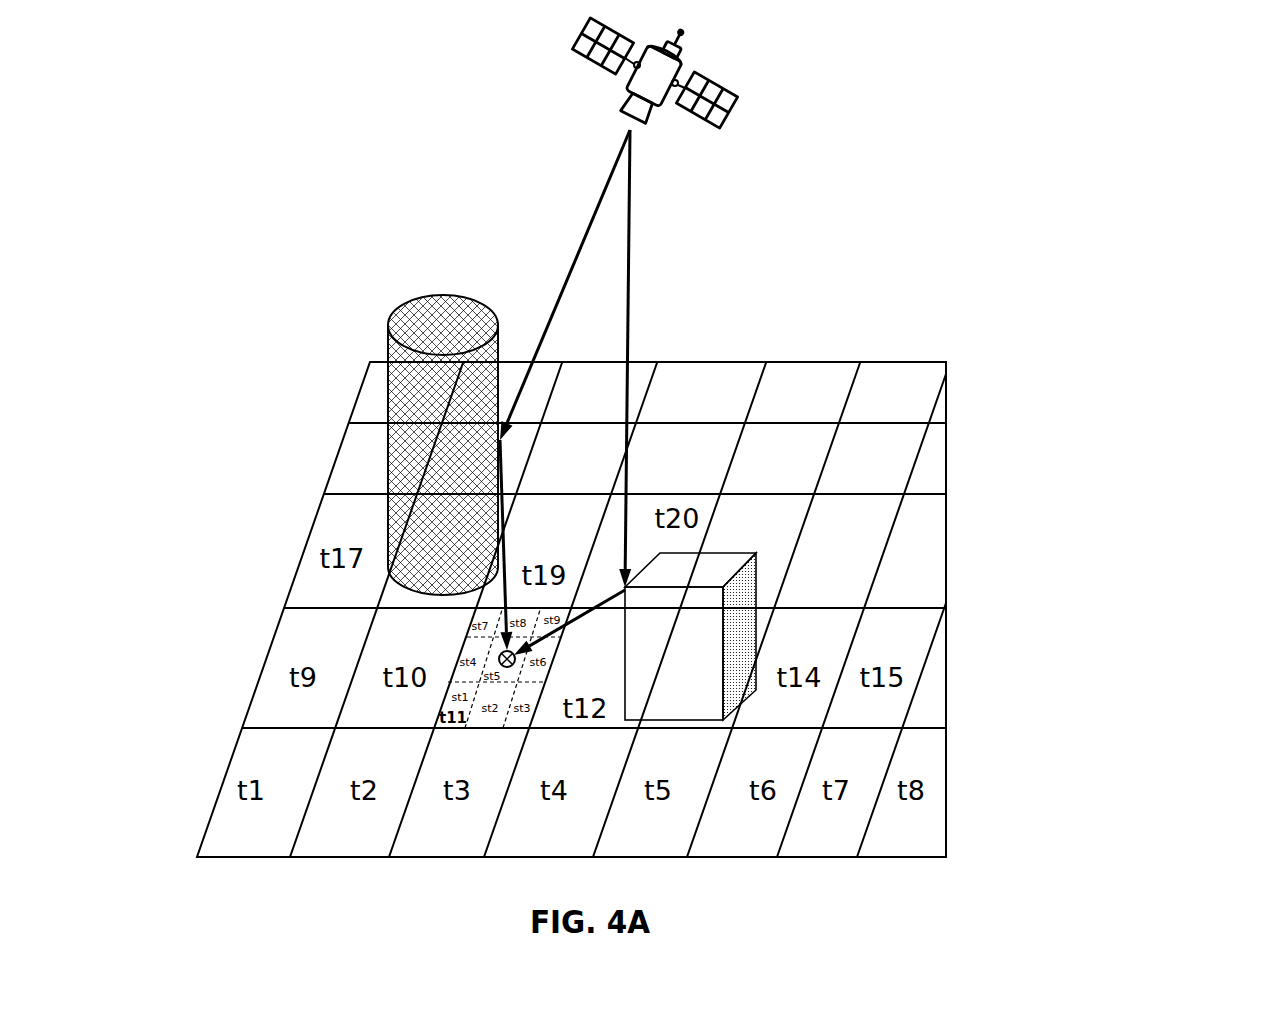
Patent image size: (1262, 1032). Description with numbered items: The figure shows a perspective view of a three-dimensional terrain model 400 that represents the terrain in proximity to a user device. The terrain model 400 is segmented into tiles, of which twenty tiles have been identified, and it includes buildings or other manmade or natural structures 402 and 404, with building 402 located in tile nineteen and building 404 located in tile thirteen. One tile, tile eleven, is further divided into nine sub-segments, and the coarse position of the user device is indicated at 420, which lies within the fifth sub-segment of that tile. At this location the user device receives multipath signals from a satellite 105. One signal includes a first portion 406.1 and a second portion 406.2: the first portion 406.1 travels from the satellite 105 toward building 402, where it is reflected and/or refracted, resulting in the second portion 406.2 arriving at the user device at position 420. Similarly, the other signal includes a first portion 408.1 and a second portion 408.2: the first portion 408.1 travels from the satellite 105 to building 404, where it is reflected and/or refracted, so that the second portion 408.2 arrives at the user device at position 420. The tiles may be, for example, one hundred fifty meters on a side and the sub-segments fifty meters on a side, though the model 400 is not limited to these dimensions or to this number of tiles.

The satellite 105 is at (683, 63).
The three-dimensional terrain model 400 is at (1135, 146).
The building 402 is at (394, 317).
The building 404 is at (727, 557).
The first portion of the signal 406.1 is at (592, 216).
The second portion of the signal 406.2 is at (503, 562).
The first portion of the signal 408.1 is at (630, 247).
The second portion of the signal 408.2 is at (592, 613).
The coarse position of the user device 420 is at (498, 656).